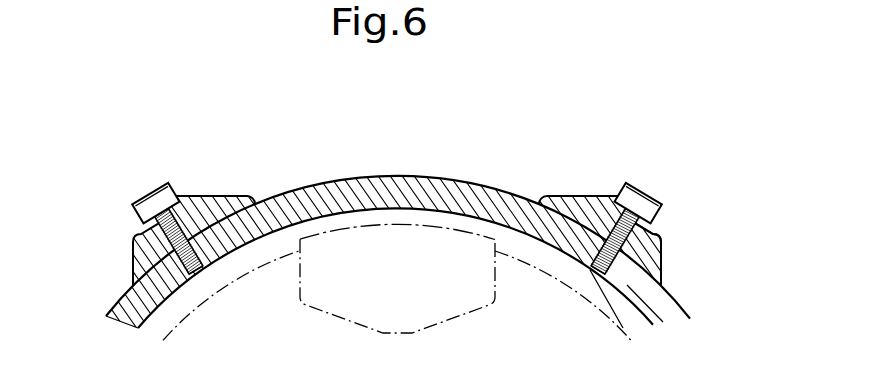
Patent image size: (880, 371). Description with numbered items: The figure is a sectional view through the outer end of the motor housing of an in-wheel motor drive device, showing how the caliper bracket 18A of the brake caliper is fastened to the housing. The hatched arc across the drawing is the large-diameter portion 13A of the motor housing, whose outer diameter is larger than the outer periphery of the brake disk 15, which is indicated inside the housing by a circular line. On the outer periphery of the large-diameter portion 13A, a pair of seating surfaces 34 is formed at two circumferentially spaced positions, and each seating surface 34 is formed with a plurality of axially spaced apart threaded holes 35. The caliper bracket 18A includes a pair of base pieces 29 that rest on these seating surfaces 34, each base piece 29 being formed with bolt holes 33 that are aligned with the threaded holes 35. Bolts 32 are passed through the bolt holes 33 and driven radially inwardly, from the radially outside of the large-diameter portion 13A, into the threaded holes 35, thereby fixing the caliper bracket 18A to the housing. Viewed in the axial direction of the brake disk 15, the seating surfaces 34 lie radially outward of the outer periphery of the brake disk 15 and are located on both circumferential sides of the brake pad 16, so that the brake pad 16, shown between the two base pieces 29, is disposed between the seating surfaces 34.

The large-diameter portion 13A is at (392, 176).
The brake disk 15 is at (265, 262).
The brake pads 16 is at (357, 247).
The caliper bracket 18A is at (660, 230).
The base pieces 29 is at (206, 205).
The bolts 32 is at (157, 200).
The bolt holes 33 is at (156, 219).
The seating surfaces 34 is at (153, 261).
The threaded holes 35 is at (200, 270).